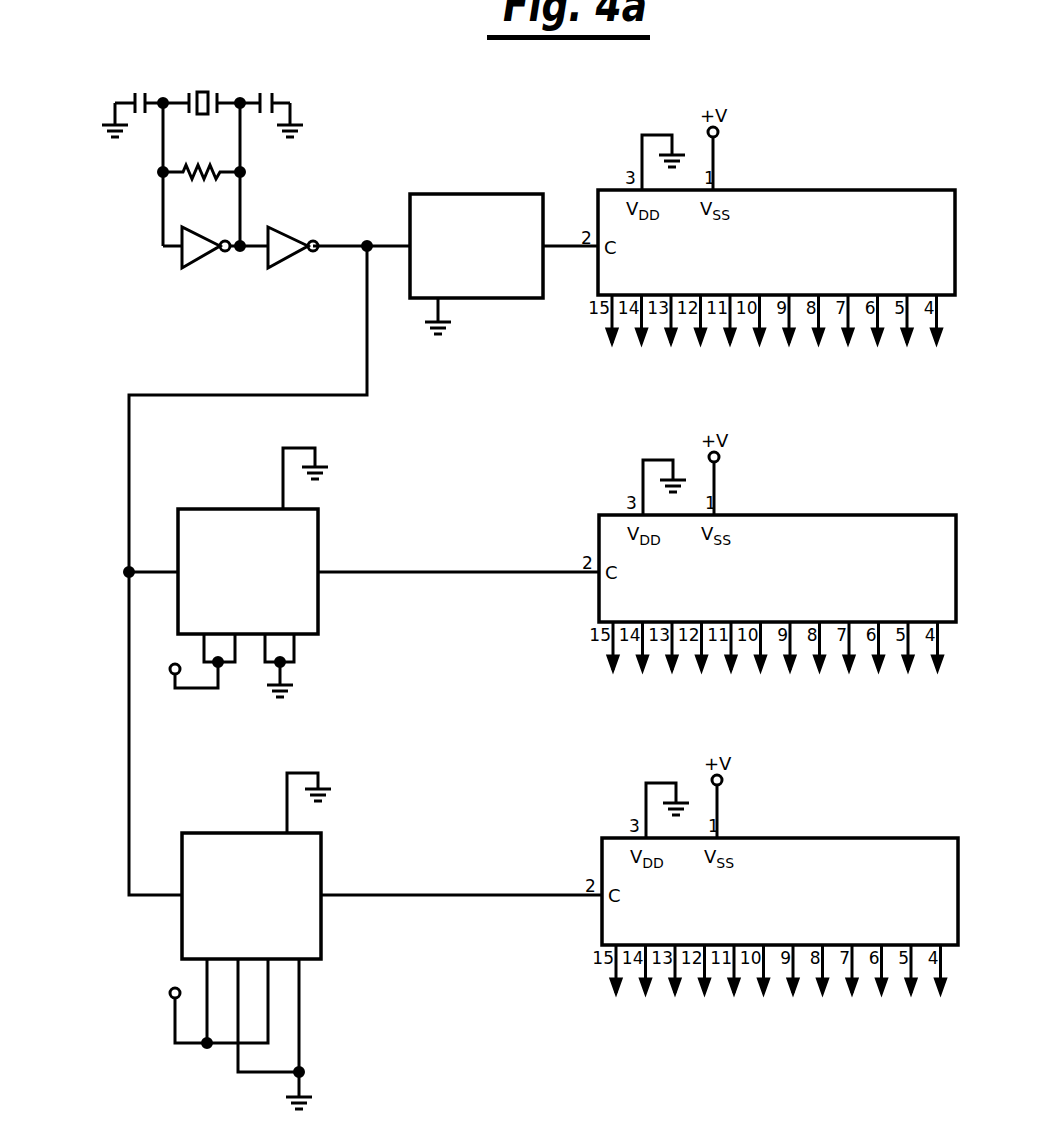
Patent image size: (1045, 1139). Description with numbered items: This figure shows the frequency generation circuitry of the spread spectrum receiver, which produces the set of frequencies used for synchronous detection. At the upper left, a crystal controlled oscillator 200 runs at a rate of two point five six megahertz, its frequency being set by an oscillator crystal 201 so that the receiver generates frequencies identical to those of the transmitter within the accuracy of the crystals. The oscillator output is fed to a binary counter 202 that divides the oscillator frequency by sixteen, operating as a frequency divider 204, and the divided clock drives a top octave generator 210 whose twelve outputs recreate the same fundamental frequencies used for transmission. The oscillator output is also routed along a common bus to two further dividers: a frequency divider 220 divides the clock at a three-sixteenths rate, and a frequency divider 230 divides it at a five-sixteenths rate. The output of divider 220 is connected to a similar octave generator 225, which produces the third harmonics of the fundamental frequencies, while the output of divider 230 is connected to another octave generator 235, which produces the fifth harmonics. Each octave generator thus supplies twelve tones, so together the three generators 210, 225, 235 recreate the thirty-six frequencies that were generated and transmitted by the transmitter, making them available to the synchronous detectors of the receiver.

The crystal controlled oscillator 200 is at (241, 158).
The oscillator crystal 201 is at (204, 92).
The binary counter 202 is at (468, 194).
The frequency divider 204 is at (673, 239).
The top octave generator 210 is at (790, 258).
The frequency divider 220 is at (228, 509).
The octave generator 225 is at (786, 575).
The frequency divider 230 is at (233, 833).
The octave generator 235 is at (796, 897).